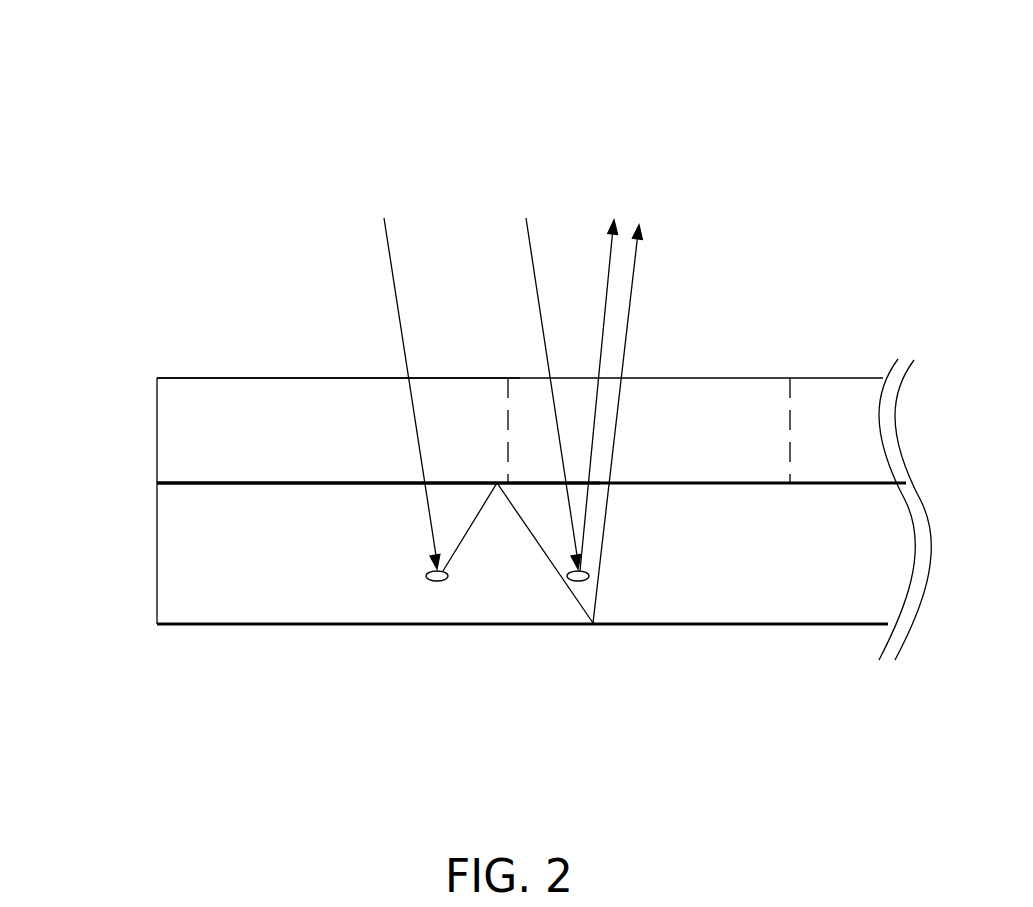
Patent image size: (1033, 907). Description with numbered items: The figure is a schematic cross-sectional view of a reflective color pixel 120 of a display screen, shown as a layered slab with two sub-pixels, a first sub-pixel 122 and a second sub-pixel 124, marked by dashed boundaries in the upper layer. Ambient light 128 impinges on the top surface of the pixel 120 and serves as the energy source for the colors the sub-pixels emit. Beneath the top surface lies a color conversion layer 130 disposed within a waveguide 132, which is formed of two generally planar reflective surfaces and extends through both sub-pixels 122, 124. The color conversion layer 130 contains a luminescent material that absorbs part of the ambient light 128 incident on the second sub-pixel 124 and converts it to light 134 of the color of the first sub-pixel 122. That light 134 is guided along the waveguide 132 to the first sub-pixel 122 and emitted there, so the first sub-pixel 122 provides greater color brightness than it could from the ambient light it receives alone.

The pixel 120 is at (312, 200).
The first sub-pixel 122 is at (755, 378).
The second sub-pixel 124 is at (268, 378).
The ambient light 128 is at (377, 208).
The color conversion layer 130 is at (373, 588).
The waveguide 132 is at (157, 483).
The light 134 is at (492, 597).